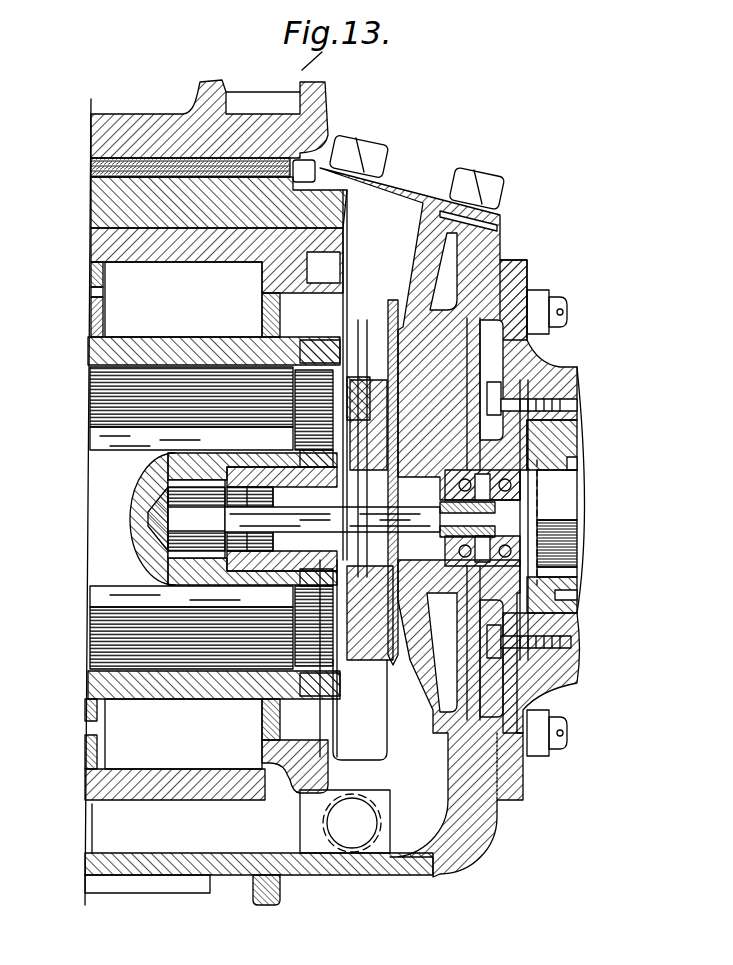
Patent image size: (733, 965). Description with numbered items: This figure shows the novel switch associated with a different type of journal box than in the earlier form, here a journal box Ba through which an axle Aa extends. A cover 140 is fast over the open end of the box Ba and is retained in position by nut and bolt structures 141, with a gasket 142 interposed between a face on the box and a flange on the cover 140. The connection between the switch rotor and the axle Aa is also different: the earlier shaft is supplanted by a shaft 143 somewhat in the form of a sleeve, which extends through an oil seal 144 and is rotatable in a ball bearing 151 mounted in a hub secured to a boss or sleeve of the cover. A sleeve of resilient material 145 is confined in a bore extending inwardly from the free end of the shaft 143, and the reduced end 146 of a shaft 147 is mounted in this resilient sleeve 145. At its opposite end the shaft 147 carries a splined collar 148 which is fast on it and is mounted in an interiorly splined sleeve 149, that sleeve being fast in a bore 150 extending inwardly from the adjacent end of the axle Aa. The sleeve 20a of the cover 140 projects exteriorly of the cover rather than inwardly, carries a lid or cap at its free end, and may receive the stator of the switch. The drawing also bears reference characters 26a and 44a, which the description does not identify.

The journal box Ba is at (92, 207).
The axle Aa is at (97, 455).
The bore 150 is at (225, 455).
The splined collar 148 is at (262, 500).
The interiorly splined sleeve 149 is at (216, 560).
The shaft 147 is at (374, 527).
The shaft 143 is at (480, 477).
The oil seal 144 is at (450, 622).
The gasket 142 is at (497, 260).
The cover 140 is at (520, 260).
The nut and bolt structures 141 is at (547, 287).
The screw 26a is at (550, 393).
The sleeve 20a is at (563, 413).
The ball bearing 151 is at (540, 480).
The sleeve of resilient material 145 is at (512, 503).
The reduced end 146 is at (567, 527).
The lower bracket web 44a is at (455, 610).